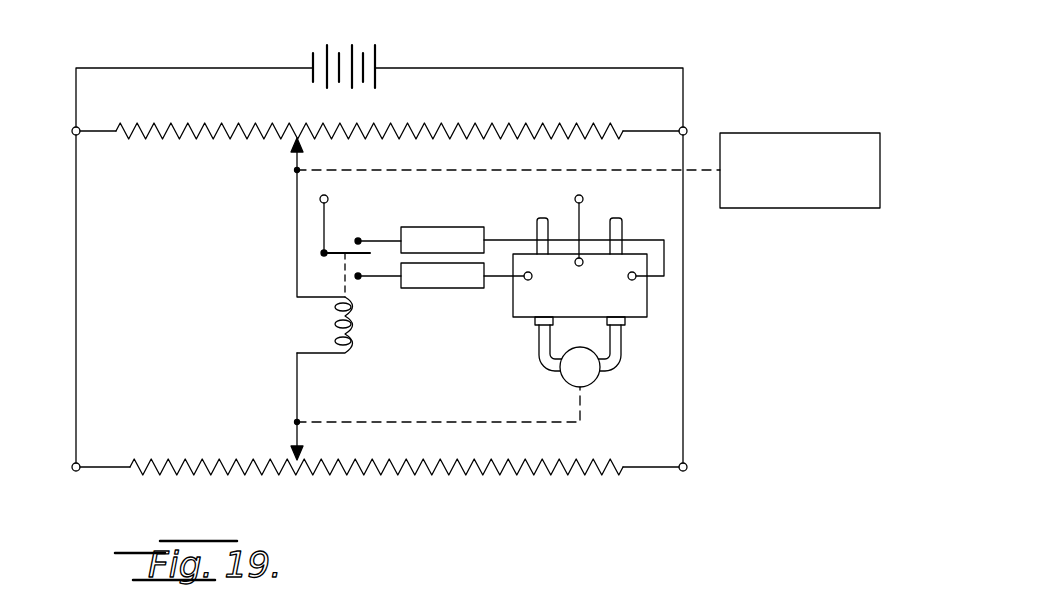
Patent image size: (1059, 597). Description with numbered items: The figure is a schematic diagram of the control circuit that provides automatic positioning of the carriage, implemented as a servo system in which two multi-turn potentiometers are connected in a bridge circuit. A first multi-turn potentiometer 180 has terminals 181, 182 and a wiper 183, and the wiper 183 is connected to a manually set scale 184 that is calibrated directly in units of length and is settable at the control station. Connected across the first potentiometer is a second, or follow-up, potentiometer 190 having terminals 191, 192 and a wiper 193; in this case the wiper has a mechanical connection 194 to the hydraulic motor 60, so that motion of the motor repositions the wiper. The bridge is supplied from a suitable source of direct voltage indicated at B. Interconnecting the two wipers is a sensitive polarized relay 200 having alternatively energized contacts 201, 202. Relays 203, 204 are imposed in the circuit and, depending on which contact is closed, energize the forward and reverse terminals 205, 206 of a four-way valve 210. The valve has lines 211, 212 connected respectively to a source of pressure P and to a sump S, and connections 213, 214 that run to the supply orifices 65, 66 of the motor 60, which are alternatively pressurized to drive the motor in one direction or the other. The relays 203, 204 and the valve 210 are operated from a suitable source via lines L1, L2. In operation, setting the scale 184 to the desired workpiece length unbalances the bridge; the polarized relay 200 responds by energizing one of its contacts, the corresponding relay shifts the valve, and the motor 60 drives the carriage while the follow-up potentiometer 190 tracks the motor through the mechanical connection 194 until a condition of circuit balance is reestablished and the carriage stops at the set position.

The source of direct voltage B is at (378, 56).
The first multi-turn potentiometer 180 is at (202, 150).
The terminal 181 is at (73, 128).
The terminal 182 is at (686, 128).
The wiper 183 is at (292, 154).
The manually set scale 184 is at (815, 209).
The second potentiometer 190 is at (194, 448).
The terminal 191 is at (76, 472).
The terminal 192 is at (686, 470).
The wiper 193 is at (292, 450).
The mechanical connection 194 is at (455, 420).
The polarized relay 200 is at (335, 313).
The contact 201 is at (358, 239).
The contact 202 is at (358, 279).
The relay 203 is at (450, 226).
The relay 204 is at (441, 289).
The forward terminal 205 is at (522, 282).
The reverse terminal 206 is at (637, 278).
The four-way valve 210 is at (655, 320).
The line 211 is at (537, 232).
The line 212 is at (622, 235).
The connection 213 is at (539, 330).
The connection 214 is at (622, 334).
The hydraulic motor 60 is at (595, 383).
The supply orifice 65 is at (556, 372).
The supply orifice 66 is at (618, 366).
The line L1 is at (342, 217).
The line L2 is at (580, 222).
The source of pressure P is at (530, 203).
The sump S is at (622, 203).